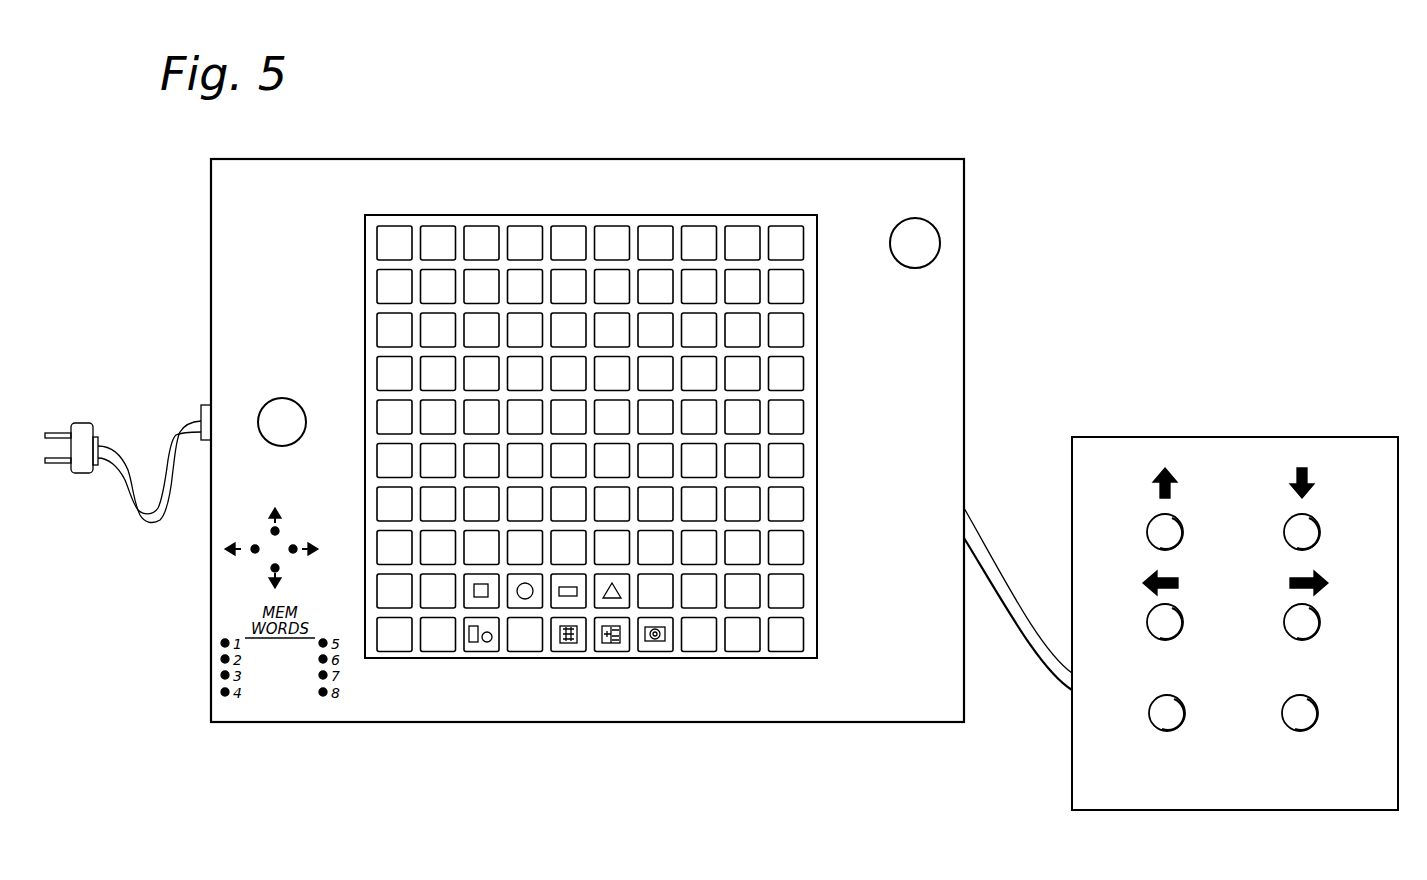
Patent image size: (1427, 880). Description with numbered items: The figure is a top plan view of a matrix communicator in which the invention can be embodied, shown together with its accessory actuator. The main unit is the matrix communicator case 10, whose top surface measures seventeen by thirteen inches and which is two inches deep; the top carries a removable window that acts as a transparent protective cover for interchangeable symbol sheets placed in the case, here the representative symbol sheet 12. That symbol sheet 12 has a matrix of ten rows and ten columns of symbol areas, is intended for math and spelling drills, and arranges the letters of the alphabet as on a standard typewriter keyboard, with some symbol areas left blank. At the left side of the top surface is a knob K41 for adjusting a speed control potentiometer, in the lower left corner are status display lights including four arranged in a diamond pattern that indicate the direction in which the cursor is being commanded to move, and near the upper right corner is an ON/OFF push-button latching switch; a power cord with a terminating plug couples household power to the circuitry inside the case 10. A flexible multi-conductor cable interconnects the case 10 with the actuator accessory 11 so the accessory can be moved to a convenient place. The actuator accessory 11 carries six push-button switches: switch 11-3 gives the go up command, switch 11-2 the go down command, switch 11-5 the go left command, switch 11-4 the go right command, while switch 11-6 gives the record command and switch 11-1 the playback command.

The matrix communicator case 10 is at (918, 147).
The representative symbol sheet 12 is at (818, 218).
The actuator accessory 11 is at (1340, 426).
The push-button switch 11-1 is at (1312, 706).
The push-button switch 11-2 is at (1317, 521).
The push-button switch 11-3 is at (1181, 522).
The push button switch 11-4 is at (1316, 618).
The push button switch 11-5 is at (1182, 612).
The push-button switch 11-6 is at (1179, 699).
The knob K41 is at (272, 410).